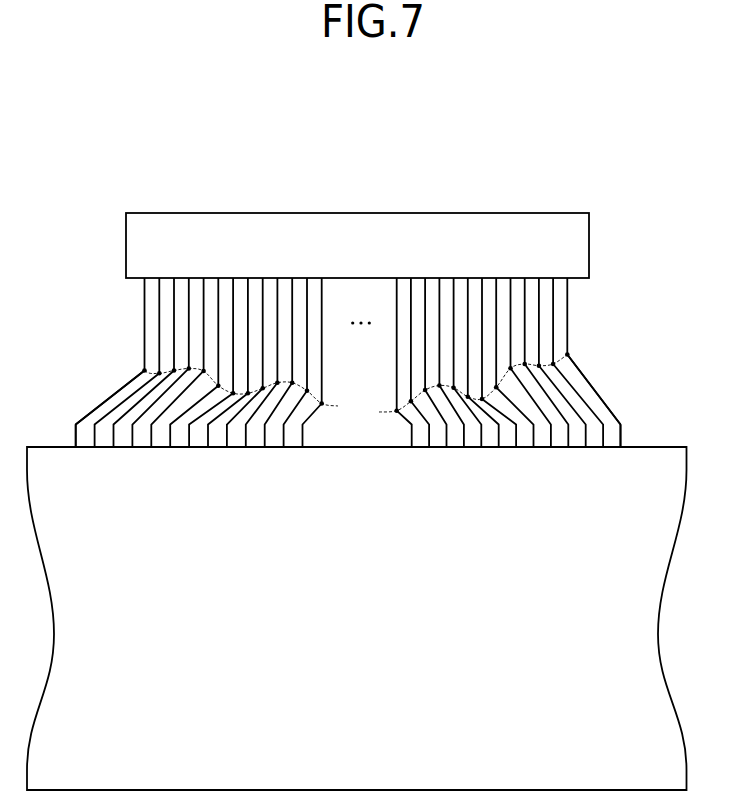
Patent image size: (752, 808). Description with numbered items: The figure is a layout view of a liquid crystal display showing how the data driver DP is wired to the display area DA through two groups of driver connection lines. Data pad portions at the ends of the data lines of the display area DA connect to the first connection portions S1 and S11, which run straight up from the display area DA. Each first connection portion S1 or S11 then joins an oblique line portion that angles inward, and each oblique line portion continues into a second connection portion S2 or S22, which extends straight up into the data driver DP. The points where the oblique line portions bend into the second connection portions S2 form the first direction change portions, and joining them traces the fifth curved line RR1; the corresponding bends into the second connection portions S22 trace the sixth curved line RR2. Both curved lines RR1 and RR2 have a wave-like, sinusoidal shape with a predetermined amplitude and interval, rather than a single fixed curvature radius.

The data driver DP is at (573, 242).
The display area DA is at (357, 618).
The first connection portion S1 is at (73, 425).
The second connection portion S2 is at (141, 369).
The first connection portion S11 is at (624, 422).
The second connection portion S22 is at (574, 280).
The fifth curved line RR1 is at (144, 370).
The sixth curved line RR2 is at (567, 354).